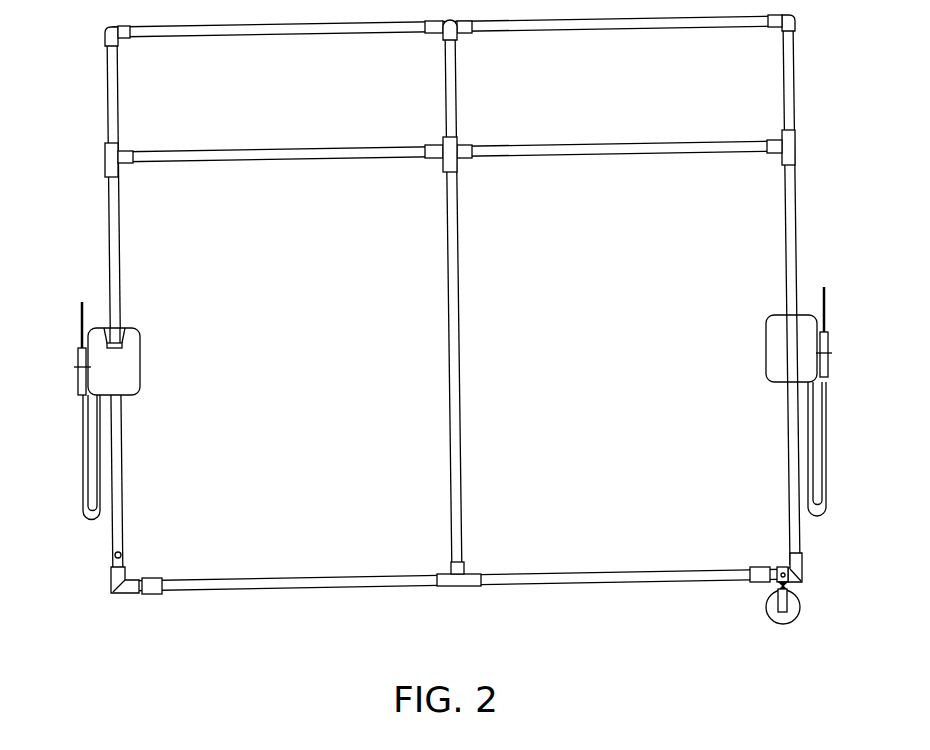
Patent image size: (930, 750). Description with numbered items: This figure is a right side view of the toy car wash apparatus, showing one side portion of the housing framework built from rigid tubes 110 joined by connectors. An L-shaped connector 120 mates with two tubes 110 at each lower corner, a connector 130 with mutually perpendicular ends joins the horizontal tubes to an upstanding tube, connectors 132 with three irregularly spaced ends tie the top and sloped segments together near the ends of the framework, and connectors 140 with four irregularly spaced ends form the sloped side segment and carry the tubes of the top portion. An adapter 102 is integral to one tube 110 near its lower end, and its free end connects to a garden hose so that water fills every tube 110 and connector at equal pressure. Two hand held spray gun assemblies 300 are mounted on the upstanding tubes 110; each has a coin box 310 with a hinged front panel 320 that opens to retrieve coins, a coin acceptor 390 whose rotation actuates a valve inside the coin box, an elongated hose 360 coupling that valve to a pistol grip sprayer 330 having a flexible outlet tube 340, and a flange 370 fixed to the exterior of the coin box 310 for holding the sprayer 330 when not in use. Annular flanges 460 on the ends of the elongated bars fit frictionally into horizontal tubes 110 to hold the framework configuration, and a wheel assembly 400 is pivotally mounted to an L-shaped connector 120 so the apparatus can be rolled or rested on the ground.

The rigid tube 110 is at (110, 90).
The connector 132 is at (105, 38).
The connector 140 is at (462, 28).
The connector 130 is at (467, 584).
The L-shaped connector 120 is at (113, 575).
The adapter 102 is at (122, 553).
The annular flange 460 is at (152, 590).
The wheel assembly 400 is at (818, 617).
The hand held spray gun assembly 300 is at (452, 385).
The coin box 310 is at (452, 324).
The front panel 320 is at (125, 378).
The pistol grip sprayer 330 is at (78, 362).
The flexible outlet tube 340 is at (80, 306).
The elongated hose 360 is at (83, 480).
The flange 370 is at (80, 368).
The coin acceptor 390 is at (118, 330).